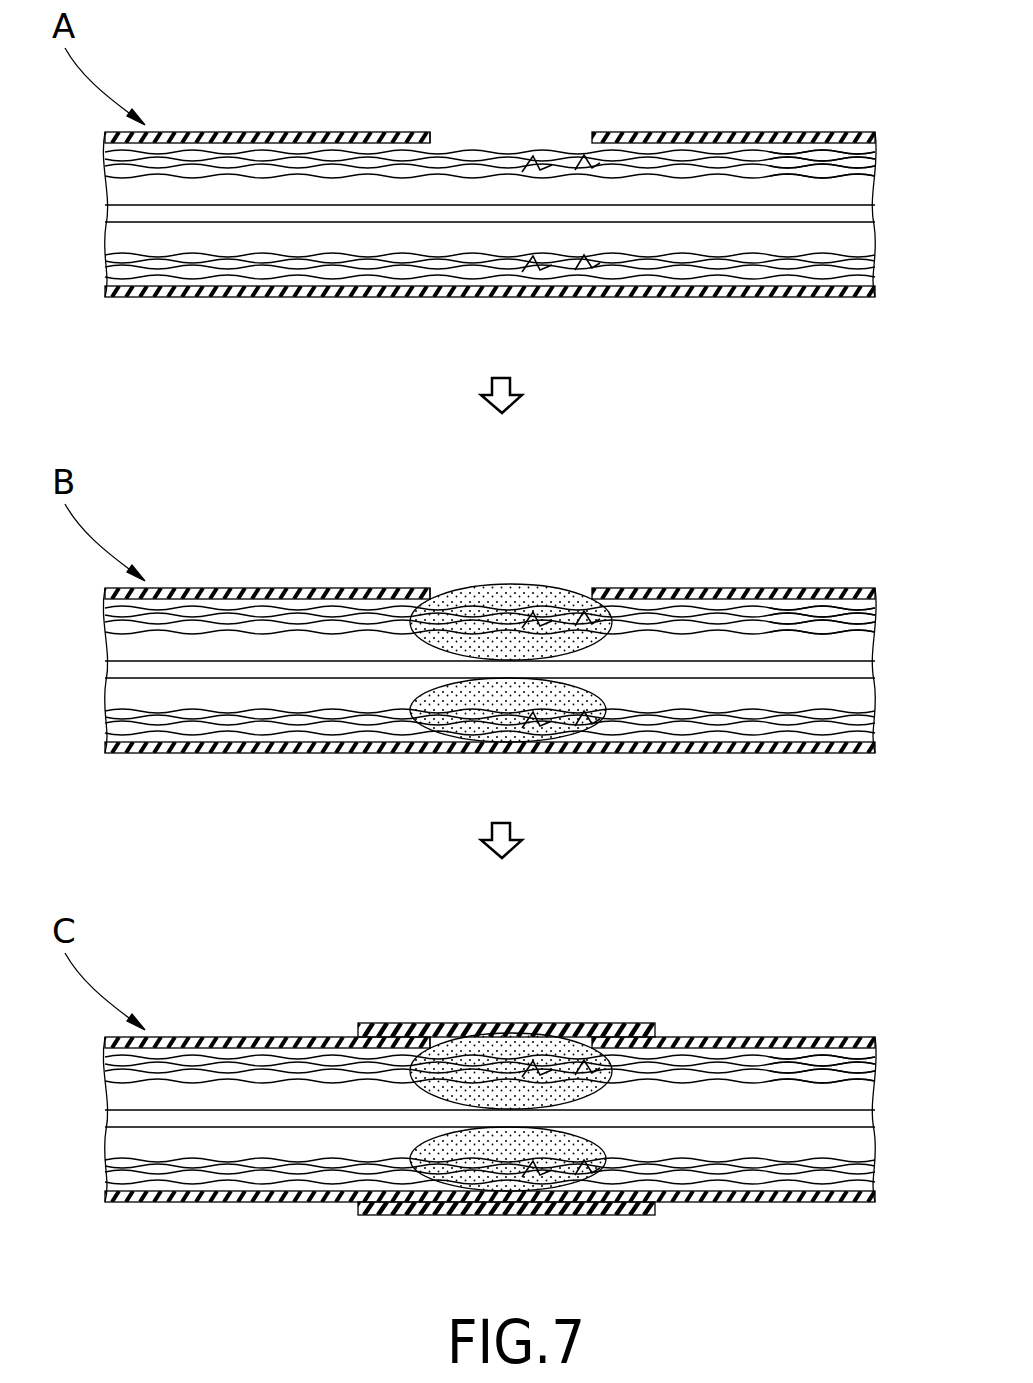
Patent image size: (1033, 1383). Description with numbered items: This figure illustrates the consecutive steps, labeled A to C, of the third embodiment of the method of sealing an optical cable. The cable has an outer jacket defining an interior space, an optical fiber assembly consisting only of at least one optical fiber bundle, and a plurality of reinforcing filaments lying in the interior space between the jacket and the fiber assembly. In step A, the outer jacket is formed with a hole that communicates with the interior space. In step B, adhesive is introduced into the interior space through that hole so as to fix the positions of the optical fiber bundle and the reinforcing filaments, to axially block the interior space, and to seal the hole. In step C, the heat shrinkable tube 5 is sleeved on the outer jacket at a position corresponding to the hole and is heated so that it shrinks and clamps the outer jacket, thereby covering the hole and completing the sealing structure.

The heat shrinkable tube 5 is at (506, 1062).